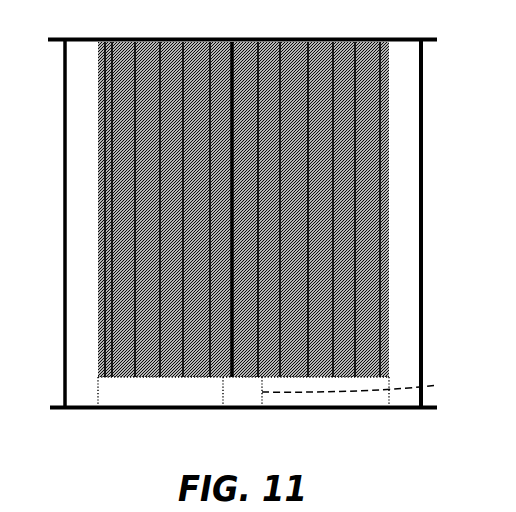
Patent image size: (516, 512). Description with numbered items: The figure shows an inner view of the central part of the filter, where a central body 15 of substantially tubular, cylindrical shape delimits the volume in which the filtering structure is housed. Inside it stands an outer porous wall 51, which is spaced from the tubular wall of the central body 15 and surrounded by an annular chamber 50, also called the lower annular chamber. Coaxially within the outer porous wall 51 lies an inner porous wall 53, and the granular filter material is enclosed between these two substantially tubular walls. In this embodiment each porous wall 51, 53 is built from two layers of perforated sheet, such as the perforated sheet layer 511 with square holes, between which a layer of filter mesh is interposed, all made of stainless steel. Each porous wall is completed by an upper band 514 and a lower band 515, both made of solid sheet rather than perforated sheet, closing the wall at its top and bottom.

The central body 15 is at (256, 230).
The annular chamber 50 is at (94, 208).
The outer porous wall 51 is at (290, 209).
The perforated sheet layer 511 is at (355, 310).
The upper band 514 is at (340, 37).
The lower band 515 is at (197, 383).
The inner porous wall 53 is at (448, 376).